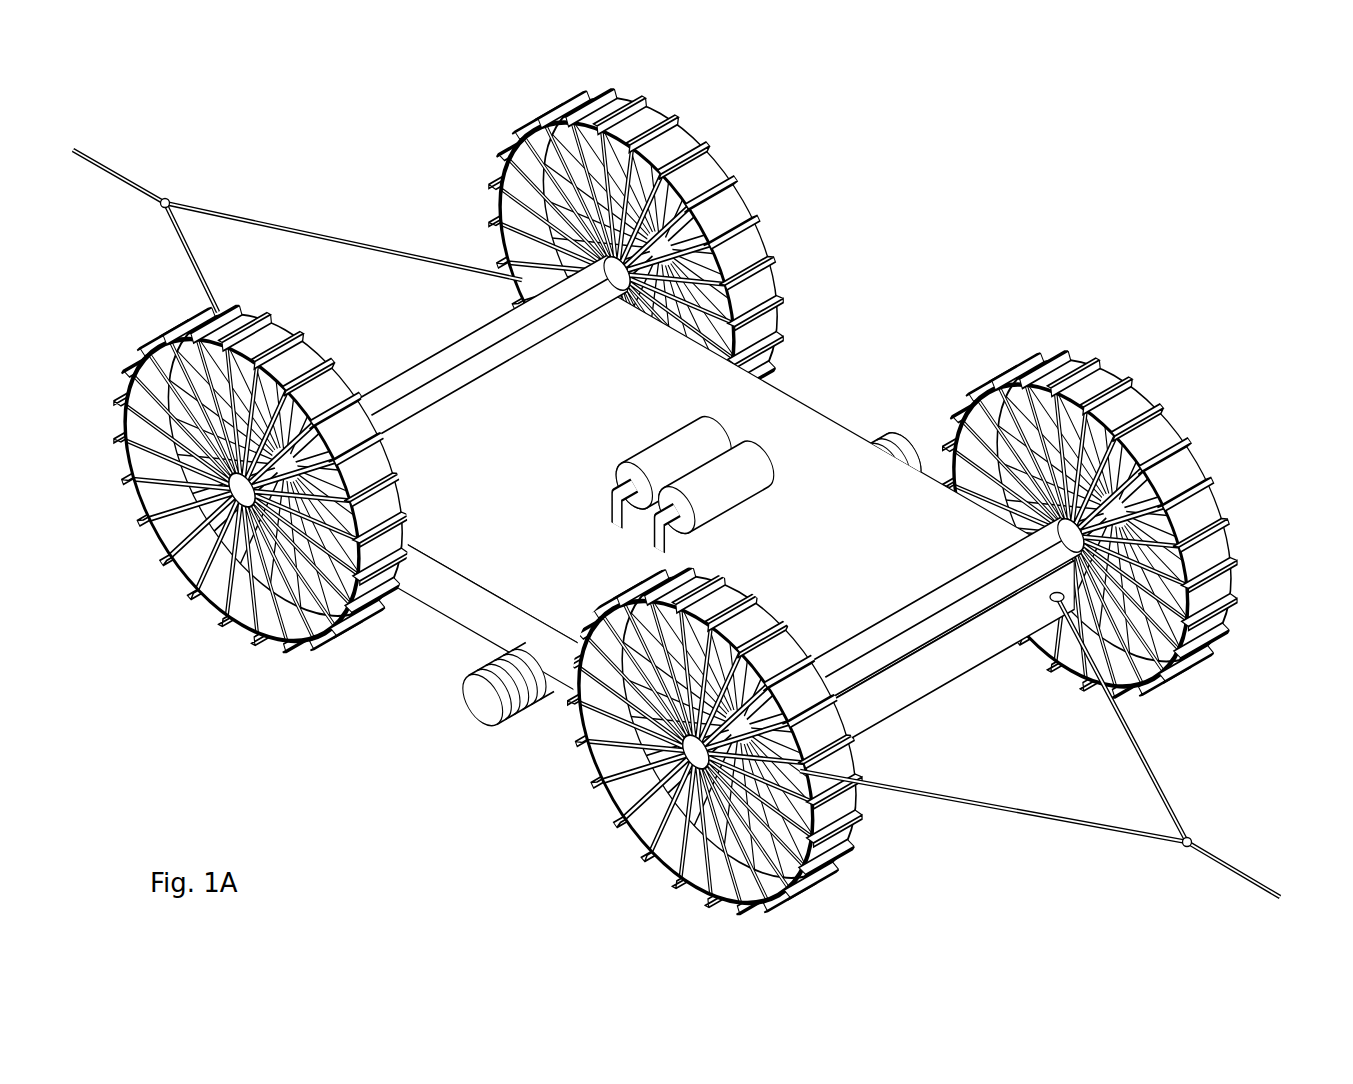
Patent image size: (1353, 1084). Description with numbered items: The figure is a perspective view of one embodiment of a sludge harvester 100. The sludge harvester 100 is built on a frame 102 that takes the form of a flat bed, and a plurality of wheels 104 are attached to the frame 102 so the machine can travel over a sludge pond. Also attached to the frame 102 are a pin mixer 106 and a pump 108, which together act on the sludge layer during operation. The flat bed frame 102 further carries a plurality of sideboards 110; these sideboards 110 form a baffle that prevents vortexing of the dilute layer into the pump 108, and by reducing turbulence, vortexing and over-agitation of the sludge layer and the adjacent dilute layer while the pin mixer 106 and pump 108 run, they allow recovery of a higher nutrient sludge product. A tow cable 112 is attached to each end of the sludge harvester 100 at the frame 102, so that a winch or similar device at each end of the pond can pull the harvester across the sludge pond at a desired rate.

The sludge harvester 100 is at (960, 240).
The frame 102 is at (815, 425).
The wheels 104 is at (703, 170).
The pin mixer 106 is at (483, 706).
The pump 108 is at (680, 465).
The sideboards 110 is at (440, 595).
The tow cable 112 is at (128, 176).